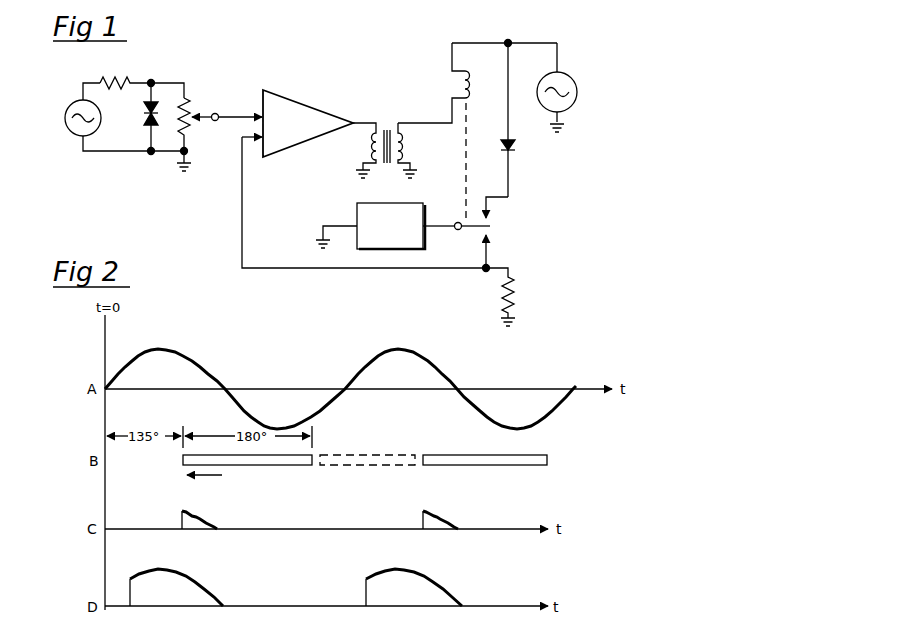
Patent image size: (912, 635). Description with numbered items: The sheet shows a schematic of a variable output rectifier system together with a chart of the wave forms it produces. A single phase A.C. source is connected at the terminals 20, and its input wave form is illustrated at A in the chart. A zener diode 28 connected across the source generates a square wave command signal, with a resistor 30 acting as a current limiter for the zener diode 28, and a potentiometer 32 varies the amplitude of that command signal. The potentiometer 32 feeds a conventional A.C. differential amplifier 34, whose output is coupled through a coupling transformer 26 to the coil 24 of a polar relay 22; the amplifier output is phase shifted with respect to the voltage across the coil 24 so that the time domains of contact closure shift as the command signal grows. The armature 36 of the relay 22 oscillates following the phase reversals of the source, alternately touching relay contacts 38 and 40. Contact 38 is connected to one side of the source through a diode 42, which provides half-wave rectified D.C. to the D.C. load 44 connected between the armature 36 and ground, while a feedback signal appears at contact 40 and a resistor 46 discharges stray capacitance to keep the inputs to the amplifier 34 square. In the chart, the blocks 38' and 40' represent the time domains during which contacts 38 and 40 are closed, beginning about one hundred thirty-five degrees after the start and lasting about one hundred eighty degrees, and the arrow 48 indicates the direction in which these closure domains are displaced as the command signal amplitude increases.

In FIG. 1, the A.C. source terminals 20 is at (75, 105).
In FIG. 1, the polar relay 22 is at (465, 63).
In FIG. 1, the coil 24 is at (461, 86).
In FIG. 1, the coupling transformer 26 is at (387, 126).
In FIG. 1, the zener diode 28 is at (146, 110).
In FIG. 1, the resistor 30 is at (121, 80).
In FIG. 1, the potentiometer 32 is at (188, 132).
In FIG. 1, the A.C. differential amplifier 34 is at (277, 94).
In FIG. 1, the armature 36 is at (478, 228).
In FIG. 1, the relay contact 38 is at (509, 204).
In FIG. 1, the relay contact 40 is at (503, 253).
In FIG. 1, the diode 42 is at (514, 146).
In FIG. 1, the D.C. load 44 is at (360, 203).
In FIG. 1, the resistor 46 is at (513, 300).
In FIG. 1, the A.C. input wave form A is at (560, 52).
In FIG. 2, the time domain block of contact 38 closure 38' is at (379, 462).
In FIG. 2, the time domain block of contact 40 closure 40' is at (368, 449).
In FIG. 2, the arrow 48 is at (214, 479).